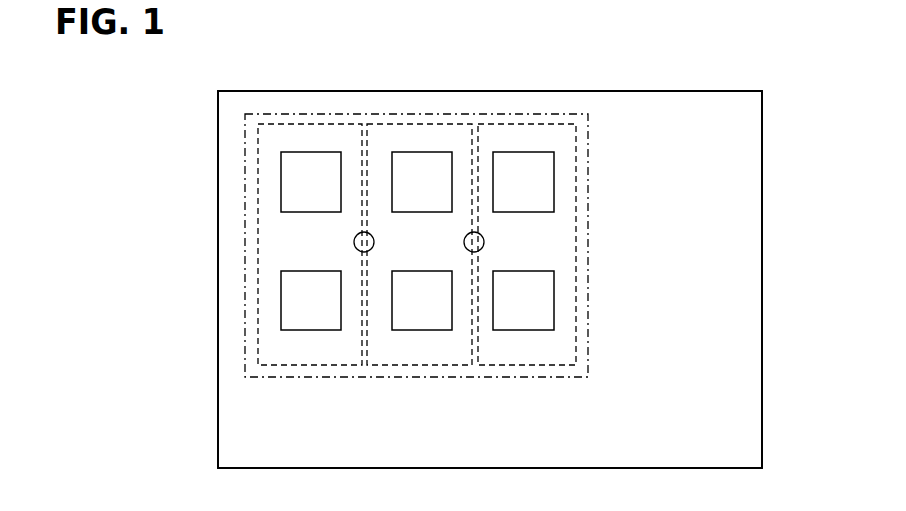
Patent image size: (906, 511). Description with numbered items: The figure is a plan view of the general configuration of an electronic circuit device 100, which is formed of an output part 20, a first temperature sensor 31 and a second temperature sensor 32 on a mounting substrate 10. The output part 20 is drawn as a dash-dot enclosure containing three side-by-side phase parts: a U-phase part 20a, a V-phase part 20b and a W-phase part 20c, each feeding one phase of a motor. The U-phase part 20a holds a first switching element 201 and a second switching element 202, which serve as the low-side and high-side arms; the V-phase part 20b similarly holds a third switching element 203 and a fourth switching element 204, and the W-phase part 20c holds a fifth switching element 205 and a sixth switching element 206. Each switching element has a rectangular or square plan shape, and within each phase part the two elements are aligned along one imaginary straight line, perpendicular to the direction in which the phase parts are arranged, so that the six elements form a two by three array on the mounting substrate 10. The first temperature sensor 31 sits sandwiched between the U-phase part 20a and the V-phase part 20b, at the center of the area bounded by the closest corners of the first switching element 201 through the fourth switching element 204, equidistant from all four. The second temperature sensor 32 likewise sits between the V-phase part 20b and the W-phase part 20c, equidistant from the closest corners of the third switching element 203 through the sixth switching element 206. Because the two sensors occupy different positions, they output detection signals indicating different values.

The electronic circuit device 100 is at (718, 73).
The mounting substrate 10 is at (600, 468).
The output part 20 is at (588, 346).
The U-phase part 20a is at (263, 122).
The V-phase part 20b is at (382, 123).
The W-phase part 20c is at (490, 123).
The first switching element 201 is at (305, 330).
The second switching element 202 is at (320, 152).
The third switching element 203 is at (418, 330).
The fourth switching element 204 is at (430, 152).
The fifth switching element 205 is at (527, 330).
The sixth switching element 206 is at (530, 152).
The first temperature sensor 31 is at (354, 243).
The second temperature sensor 32 is at (484, 242).